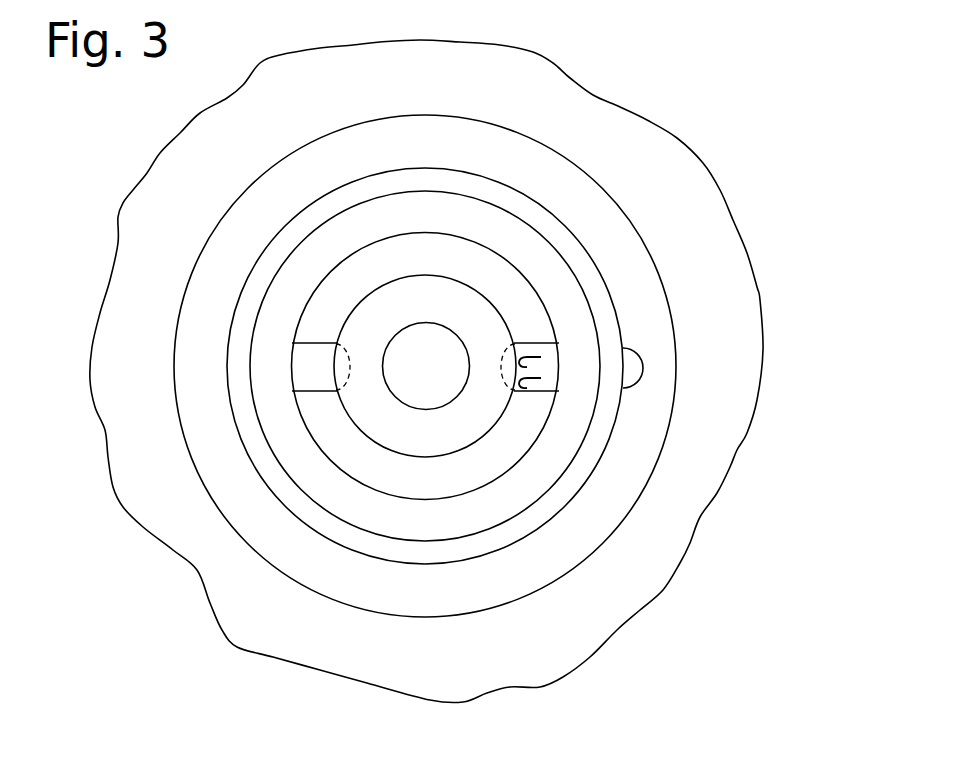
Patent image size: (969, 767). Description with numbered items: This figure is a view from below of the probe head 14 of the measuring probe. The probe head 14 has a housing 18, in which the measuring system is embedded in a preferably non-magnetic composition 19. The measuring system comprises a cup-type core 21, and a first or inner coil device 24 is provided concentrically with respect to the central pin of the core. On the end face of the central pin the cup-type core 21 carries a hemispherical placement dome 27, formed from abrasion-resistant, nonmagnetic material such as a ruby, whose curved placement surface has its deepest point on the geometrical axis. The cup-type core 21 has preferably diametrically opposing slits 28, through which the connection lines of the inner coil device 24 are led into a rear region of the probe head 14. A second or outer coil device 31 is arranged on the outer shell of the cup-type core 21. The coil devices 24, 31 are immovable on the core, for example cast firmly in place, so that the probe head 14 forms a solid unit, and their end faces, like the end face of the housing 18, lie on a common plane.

The probe head 14 is at (742, 113).
The housing 18 is at (685, 480).
The non-magnetic composition 19 is at (420, 550).
The cup-type core 21 is at (480, 266).
The inner coil device 24 is at (387, 422).
The hemispherical placement dome 27 is at (407, 378).
The slits 28 is at (311, 367).
The outer coil device 31 is at (370, 513).